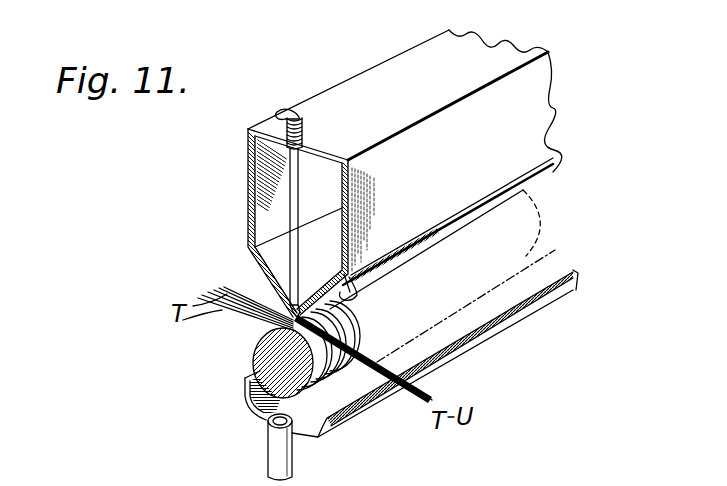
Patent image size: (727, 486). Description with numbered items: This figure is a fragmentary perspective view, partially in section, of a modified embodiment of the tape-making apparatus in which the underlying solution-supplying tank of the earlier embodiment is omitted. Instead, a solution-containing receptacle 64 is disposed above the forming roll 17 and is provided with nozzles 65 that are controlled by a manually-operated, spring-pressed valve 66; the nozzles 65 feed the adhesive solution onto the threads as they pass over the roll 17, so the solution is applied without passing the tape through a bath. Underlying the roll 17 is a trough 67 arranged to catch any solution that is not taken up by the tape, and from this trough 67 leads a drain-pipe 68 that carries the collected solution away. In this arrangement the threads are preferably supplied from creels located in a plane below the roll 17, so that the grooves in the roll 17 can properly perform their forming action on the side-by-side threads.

The solution-containing receptacle 64 is at (553, 130).
The nozzles 65 is at (278, 300).
The manually-operated, spring-pressed valve 66 is at (308, 300).
The forming roll 17 is at (552, 240).
The trough 67 is at (574, 284).
The drain-pipe 68 is at (293, 462).